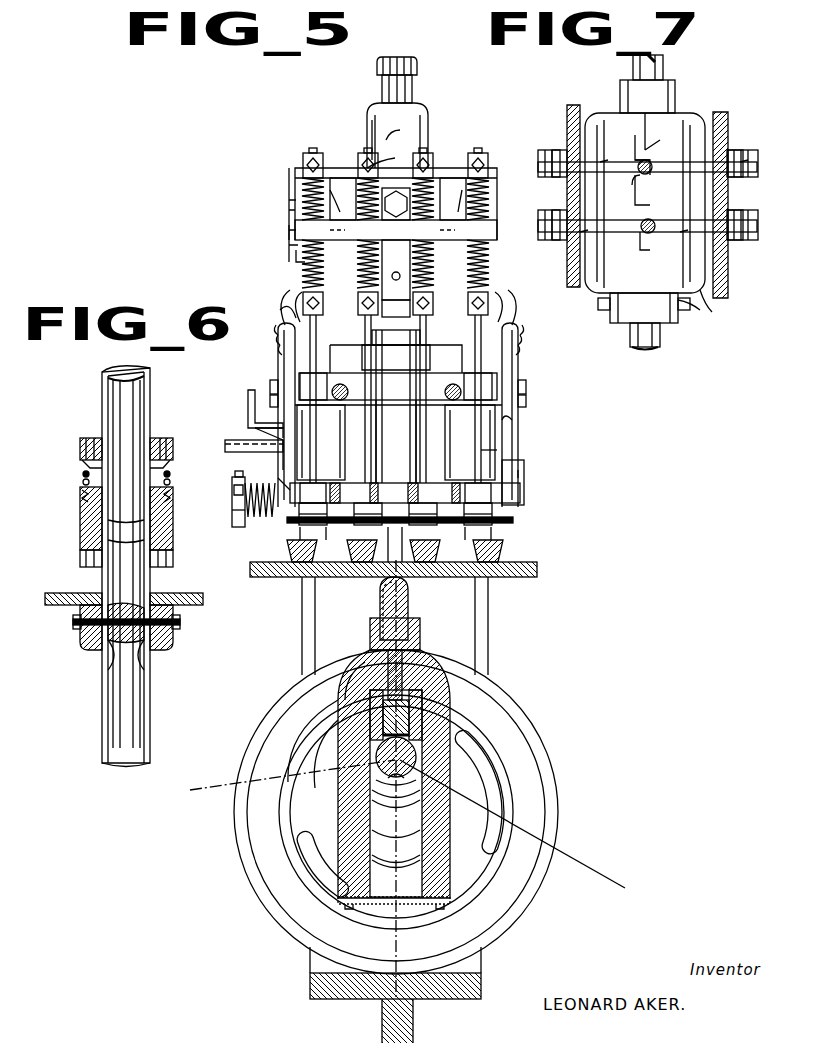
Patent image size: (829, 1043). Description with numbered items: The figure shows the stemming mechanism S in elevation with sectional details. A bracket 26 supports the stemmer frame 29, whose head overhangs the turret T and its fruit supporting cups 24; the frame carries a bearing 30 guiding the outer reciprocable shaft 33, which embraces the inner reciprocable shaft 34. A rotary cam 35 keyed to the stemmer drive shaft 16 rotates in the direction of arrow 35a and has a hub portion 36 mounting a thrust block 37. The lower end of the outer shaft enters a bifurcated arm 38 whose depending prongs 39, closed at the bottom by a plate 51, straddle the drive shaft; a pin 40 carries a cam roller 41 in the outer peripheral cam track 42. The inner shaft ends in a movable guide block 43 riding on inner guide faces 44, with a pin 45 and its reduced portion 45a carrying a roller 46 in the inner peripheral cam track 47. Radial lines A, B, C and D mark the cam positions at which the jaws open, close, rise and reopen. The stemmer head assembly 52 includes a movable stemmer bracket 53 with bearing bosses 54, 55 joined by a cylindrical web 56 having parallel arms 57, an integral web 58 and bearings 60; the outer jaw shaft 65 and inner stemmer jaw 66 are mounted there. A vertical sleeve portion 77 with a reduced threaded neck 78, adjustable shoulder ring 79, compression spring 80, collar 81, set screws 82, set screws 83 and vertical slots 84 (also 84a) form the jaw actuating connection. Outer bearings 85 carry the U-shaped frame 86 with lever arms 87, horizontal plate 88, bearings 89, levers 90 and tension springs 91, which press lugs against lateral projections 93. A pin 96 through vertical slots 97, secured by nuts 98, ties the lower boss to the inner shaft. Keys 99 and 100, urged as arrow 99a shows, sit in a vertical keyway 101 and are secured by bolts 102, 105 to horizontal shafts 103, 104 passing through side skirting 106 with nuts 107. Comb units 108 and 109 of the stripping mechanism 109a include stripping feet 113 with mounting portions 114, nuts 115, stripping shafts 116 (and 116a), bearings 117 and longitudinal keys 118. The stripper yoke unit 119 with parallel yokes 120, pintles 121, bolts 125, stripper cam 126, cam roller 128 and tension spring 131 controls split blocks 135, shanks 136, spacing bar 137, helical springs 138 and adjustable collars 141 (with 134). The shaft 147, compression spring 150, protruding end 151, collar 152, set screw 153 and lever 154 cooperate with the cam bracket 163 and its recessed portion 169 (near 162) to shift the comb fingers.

In FIG. 5, the stemmer drive shaft 16 is at (416, 762).
In FIG. 5, the fruit supporting cups 24 is at (290, 555).
In FIG. 5, the bracket 26 is at (440, 992).
In FIG. 5, the stemmer frame 29 is at (428, 135).
In FIG. 5, the bearing 30 is at (424, 112).
In FIG. 5, the outer reciprocable shaft 33 is at (410, 72).
In FIG. 6, the outer reciprocable shaft 33 is at (148, 370).
In FIG. 7, the outer reciprocable shaft 33 is at (630, 335).
In FIG. 5, the inner reciprocable shaft 34 is at (402, 690).
In FIG. 6, the inner reciprocable shaft 34 is at (115, 398).
In FIG. 7, the inner reciprocable shaft 34 is at (640, 350).
In FIG. 5, the rotary cam 35 is at (240, 842).
In FIG. 5, the arrow 35a is at (555, 688).
In FIG. 5, the hub portion 36 is at (376, 772).
In FIG. 5, the thrust block 37 is at (409, 722).
In FIG. 5, the bifurcated arm 38 is at (355, 660).
In FIG. 5, the depending prongs 39 is at (355, 852).
In FIG. 5, the pin 40 is at (350, 680).
In FIG. 5, the cam roller 41 is at (420, 632).
In FIG. 5, the outer peripheral cam track 42 is at (305, 720).
In FIG. 5, the movable guide block 43 is at (422, 700).
In FIG. 5, the inner guide faces 44 is at (396, 793).
In FIG. 5, the pin 45 is at (383, 737).
In FIG. 5, the reduced portion 45a is at (361, 751).
In FIG. 5, the roller 46 is at (470, 718).
In FIG. 5, the inner peripheral cam track 47 is at (300, 740).
In FIG. 5, the plate 51 is at (396, 904).
In FIG. 5, the stemmer head assembly 52 is at (520, 420).
In FIG. 6, the movable stemmer bracket 53 is at (62, 596).
In FIG. 7, the movable stemmer bracket 53 is at (705, 118).
In FIG. 7, the bearing boss 54 is at (663, 80).
In FIG. 6, the bearing boss 55 is at (80, 645).
In FIG. 7, the bearing boss 55 is at (612, 310).
In FIG. 7, the cylindrical web 56 is at (715, 304).
In FIG. 5, the parallel arms 57 is at (388, 368).
In FIG. 5, the integral web 58 is at (420, 338).
In FIG. 5, the bearings 60 is at (340, 418).
In FIG. 5, the outer jaw shaft 65 is at (548, 398).
In FIG. 5, the inner stemmer jaw 66 is at (396, 406).
In FIG. 6, the vertical sleeve portion 77 is at (80, 530).
In FIG. 6, the reduced threaded neck 78 is at (84, 482).
In FIG. 6, the adjustable shoulder ring 79 is at (82, 500).
In FIG. 6, the compression spring 80 is at (84, 474).
In FIG. 6, the collar 81 is at (90, 432).
In FIG. 6, the set screws 82 is at (80, 448).
In FIG. 6, the set screws 83 is at (80, 558).
In FIG. 6, the vertical slots 84 is at (126, 523).
In FIG. 6, the groove 84a is at (126, 543).
In FIG. 5, the outer bearings 85 is at (396, 444).
In FIG. 5, the U-shaped frame 86 is at (283, 465).
In FIG. 6, the U-shaped frame 86 is at (126, 622).
In FIG. 5, the lever arms 87 is at (260, 450).
In FIG. 5, the horizontal plate 88 is at (254, 435).
In FIG. 5, the bearing 89 is at (270, 385).
In FIG. 5, the lever 90 is at (278, 350).
In FIG. 5, the tension spring 91 is at (285, 295).
In FIG. 5, the lateral projections 93 is at (280, 480).
In FIG. 7, the pin 96 is at (700, 312).
In FIG. 6, the vertical slots 97 is at (108, 665).
In FIG. 6, the nuts 98 is at (73, 624).
In FIG. 7, the nuts 98 is at (598, 304).
In FIG. 7, the upper key 99 is at (632, 125).
In FIG. 7, the arrow 99a is at (621, 184).
In FIG. 7, the lower key 100 is at (623, 190).
In FIG. 7, the vertical keyway 101 is at (647, 128).
In FIG. 7, the bolt 102 is at (640, 150).
In FIG. 7, the horizontal shaft 103 is at (648, 163).
In FIG. 7, the horizontal shaft 104 is at (648, 225).
In FIG. 7, the bolt 105 is at (638, 240).
In FIG. 7, the side skirting 106 is at (567, 268).
In FIG. 7, the nuts 107 is at (745, 152).
In FIG. 5, the comb unit 108 is at (287, 523).
In FIG. 5, the comb unit 109 is at (452, 470).
In FIG. 5, the stripping mechanism 109a is at (524, 478).
In FIG. 5, the stripping feet 113 is at (340, 547).
In FIG. 5, the mounting portion 114 is at (395, 513).
In FIG. 5, the nuts 115 is at (300, 540).
In FIG. 5, the stripping shaft 116 is at (316, 335).
In FIG. 5, the rod 116a is at (468, 443).
In FIG. 5, the bearings 117 is at (340, 470).
In FIG. 5, the longitudinal key 118 is at (395, 450).
In FIG. 5, the stripper yoke unit 119 is at (384, 146).
In FIG. 5, the parallel yokes 120 is at (398, 190).
In FIG. 5, the pintles 121 is at (289, 226).
In FIG. 5, the bolts 125 is at (397, 270).
In FIG. 5, the stripper cam 126 is at (406, 266).
In FIG. 5, the cam roller 128 is at (396, 308).
In FIG. 5, the tension spring 131 is at (289, 180).
In FIG. 5, the hex nut 134 is at (405, 172).
In FIG. 5, the split block 135 is at (395, 233).
In FIG. 5, the cylindrical shank portion 136 is at (392, 233).
In FIG. 5, the stripping shaft spacing bar 137 is at (508, 226).
In FIG. 5, the helical spring 138 is at (289, 196).
In FIG. 5, the adjustable collar 141 is at (313, 153).
In FIG. 5, the shaft 147 is at (245, 498).
In FIG. 5, the compression spring 150 is at (232, 522).
In FIG. 5, the protruding end 151 is at (232, 512).
In FIG. 5, the collar 152 is at (232, 488).
In FIG. 5, the set screw 153 is at (235, 474).
In FIG. 5, the lever 154 is at (225, 446).
In FIG. 5, the lug 162 is at (520, 475).
In FIG. 5, the cam bracket 163 is at (248, 395).
In FIG. 5, the recessed portion 169 is at (255, 430).
In FIG. 5, the radial line A is at (512, 824).
In FIG. 5, the radial line B is at (408, 612).
In FIG. 5, the radial line C is at (197, 783).
In FIG. 5, the radial line D is at (397, 943).
In FIG. 5, the stemming mechanism S is at (282, 305).
In FIG. 5, the turret T is at (537, 572).